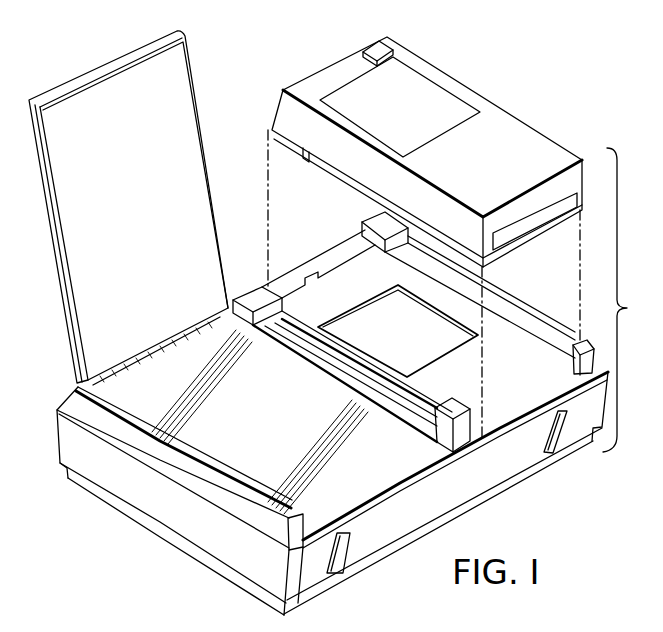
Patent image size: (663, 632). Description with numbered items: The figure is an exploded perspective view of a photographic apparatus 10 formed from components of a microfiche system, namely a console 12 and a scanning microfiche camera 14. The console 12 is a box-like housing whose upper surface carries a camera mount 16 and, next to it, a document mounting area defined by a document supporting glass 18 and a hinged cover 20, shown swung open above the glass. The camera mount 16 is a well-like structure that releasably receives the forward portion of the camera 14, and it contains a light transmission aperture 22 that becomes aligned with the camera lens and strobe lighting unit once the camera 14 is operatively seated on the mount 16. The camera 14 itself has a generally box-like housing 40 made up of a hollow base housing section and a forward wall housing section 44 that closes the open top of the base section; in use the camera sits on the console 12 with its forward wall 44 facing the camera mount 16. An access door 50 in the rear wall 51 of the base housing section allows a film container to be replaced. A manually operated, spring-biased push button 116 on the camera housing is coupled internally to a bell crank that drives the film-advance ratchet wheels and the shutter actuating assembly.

The photographic apparatus 10 is at (627, 300).
The console 12 is at (116, 517).
The scanning microfiche camera 14 is at (514, 100).
The camera mount 16 is at (512, 345).
The document supporting glass 18 is at (278, 426).
The hinged cover 20 is at (190, 35).
The light transmission aperture 22 is at (385, 316).
The housing 40 is at (562, 150).
The forward wall housing section 44 is at (306, 155).
The access door 50 is at (425, 105).
The rear wall 51 is at (518, 140).
The push button 116 is at (377, 50).